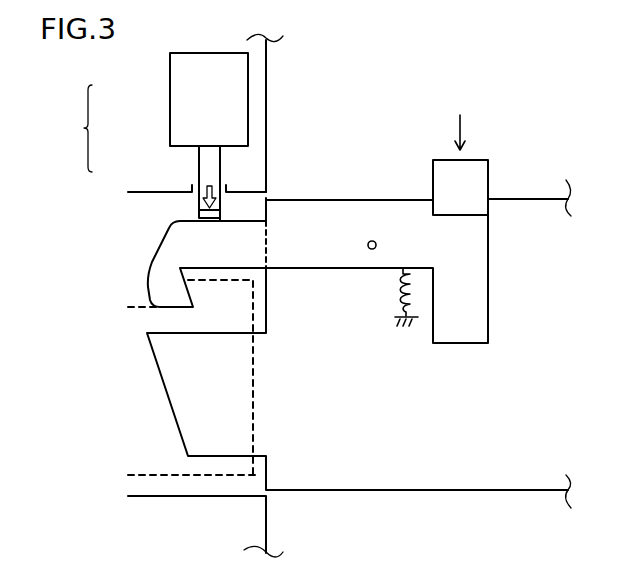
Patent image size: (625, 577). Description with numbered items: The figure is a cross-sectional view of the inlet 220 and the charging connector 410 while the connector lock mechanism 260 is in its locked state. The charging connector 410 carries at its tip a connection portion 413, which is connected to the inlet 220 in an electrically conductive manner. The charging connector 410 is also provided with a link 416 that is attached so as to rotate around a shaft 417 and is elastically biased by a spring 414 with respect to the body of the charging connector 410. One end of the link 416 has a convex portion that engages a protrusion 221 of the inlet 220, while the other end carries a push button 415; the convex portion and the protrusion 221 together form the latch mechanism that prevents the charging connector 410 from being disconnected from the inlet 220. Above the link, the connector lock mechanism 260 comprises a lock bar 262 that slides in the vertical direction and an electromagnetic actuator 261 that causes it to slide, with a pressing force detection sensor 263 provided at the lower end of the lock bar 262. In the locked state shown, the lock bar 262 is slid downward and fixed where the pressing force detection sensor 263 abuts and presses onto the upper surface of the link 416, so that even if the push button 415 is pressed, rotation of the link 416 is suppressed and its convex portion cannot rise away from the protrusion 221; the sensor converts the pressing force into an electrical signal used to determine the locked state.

The connector lock mechanism 260 is at (68, 128).
The electromagnetic actuator 261 is at (170, 100).
The lock bar 262 is at (199, 180).
The pressing force detection sensor 263 is at (197, 216).
The link 416 is at (152, 264).
The push button 415 is at (477, 160).
The shaft 417 is at (372, 240).
The spring 414 is at (400, 294).
The protrusion 221 is at (200, 290).
The connection portion 413 is at (166, 408).
The inlet 220 is at (178, 478).
The charging connector 410 is at (466, 505).